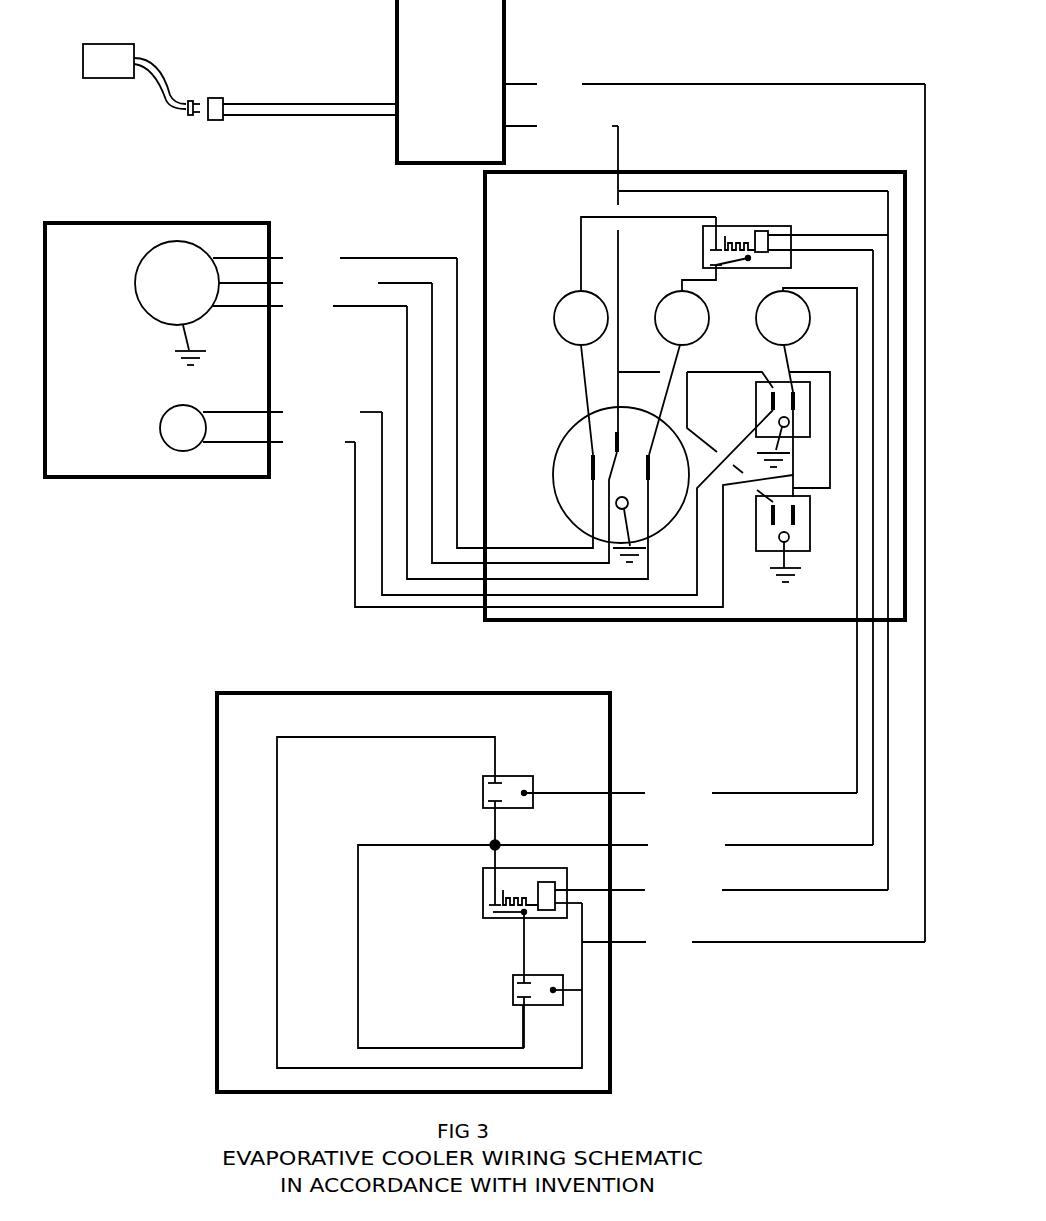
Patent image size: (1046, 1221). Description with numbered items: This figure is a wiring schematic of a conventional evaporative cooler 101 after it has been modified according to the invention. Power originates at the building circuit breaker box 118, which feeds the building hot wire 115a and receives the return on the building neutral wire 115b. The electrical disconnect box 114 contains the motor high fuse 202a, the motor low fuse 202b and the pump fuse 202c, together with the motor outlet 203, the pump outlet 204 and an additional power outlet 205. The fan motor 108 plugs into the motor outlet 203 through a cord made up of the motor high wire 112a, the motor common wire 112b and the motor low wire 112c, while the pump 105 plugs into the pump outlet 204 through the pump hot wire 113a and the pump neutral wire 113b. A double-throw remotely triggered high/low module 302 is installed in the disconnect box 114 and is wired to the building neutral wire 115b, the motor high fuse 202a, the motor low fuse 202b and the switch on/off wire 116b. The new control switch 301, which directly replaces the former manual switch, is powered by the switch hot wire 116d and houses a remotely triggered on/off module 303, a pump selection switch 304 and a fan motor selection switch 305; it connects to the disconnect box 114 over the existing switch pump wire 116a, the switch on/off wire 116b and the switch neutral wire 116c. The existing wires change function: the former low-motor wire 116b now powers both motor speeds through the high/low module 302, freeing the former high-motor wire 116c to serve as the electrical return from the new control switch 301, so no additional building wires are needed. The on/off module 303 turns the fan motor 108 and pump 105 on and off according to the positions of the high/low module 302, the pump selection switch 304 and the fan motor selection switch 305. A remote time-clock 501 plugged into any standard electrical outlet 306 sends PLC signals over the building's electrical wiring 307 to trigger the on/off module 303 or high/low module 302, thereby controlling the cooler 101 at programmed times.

The evaporative cooler 101 is at (190, 478).
The pump 105 is at (178, 451).
The fan motor 108 is at (175, 327).
The motor high wire 112a is at (444, 257).
The motor common wire 112b is at (416, 283).
The motor low wire 112c is at (391, 306).
The pump hot wire 113a is at (356, 515).
The pump neutral wire 113b is at (380, 547).
The electrical disconnect box 114 is at (650, 620).
The building hot wire 115a is at (525, 84).
The building neutral wire 115b is at (517, 126).
The switch pump wire 116a is at (810, 793).
The switch on/off wire 116b is at (810, 845).
The switch neutral wire 116c is at (810, 890).
The switch hot wire 116d is at (810, 942).
The building circuit breaker box 118 is at (397, 22).
The motor high fuse 202a is at (566, 346).
The motor low fuse 202b is at (697, 340).
The pump fuse 202c is at (755, 322).
The motor outlet 203 is at (566, 430).
The pump outlet 204 is at (755, 388).
The additional power outlet 205 is at (762, 553).
The new control switch 301 is at (612, 1015).
The high/low module 302 is at (735, 226).
The on/off module 303 is at (483, 878).
The pump selection switch 304 is at (530, 776).
The fan motor selection switch 305 is at (538, 1005).
The standard electrical outlet 306 is at (216, 98).
The building's electrical wiring 307 is at (318, 118).
The remote time-clock 501 is at (120, 78).